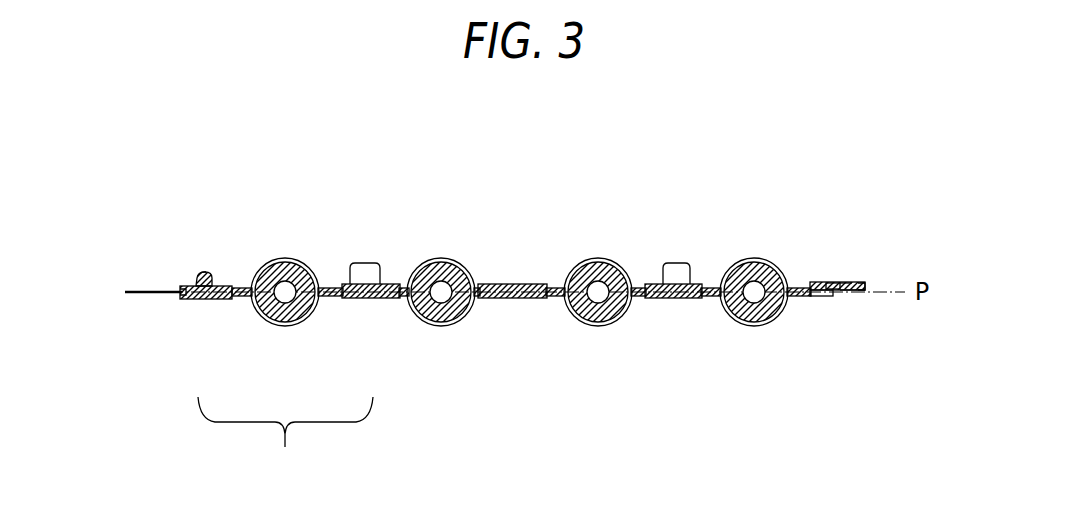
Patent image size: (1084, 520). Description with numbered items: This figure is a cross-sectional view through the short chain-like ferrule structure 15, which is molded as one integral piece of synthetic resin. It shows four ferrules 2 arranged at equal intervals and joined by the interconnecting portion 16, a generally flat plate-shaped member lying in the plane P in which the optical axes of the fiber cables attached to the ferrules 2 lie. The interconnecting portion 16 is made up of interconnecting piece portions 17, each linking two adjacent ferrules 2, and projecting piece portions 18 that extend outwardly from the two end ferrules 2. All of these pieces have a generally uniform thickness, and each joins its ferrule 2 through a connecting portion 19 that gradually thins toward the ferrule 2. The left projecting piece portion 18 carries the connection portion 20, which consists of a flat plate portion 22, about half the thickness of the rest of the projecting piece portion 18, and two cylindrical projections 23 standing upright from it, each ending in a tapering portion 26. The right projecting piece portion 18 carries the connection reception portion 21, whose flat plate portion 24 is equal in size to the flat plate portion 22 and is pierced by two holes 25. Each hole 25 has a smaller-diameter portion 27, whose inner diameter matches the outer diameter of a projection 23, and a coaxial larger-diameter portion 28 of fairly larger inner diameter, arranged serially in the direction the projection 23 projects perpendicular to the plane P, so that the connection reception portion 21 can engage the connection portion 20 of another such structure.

The ferrule 2 is at (285, 259).
The short chain-like ferrule structure 15 is at (523, 204).
The interconnecting portion 16 is at (285, 439).
The interconnecting piece portion 17 is at (366, 299).
The projecting piece portion 18 is at (222, 300).
The connecting portion 19 is at (242, 288).
The connection portion 20 is at (190, 300).
The connection reception portion 21 is at (855, 298).
The flat plate portion 22 is at (183, 287).
The projection 23 is at (200, 271).
The flat plate portion 24 is at (866, 286).
The hole 25 is at (838, 284).
The tapering portion 26 is at (210, 272).
The smaller-diameter portion 27 is at (840, 298).
The larger-diameter portion 28 is at (845, 283).